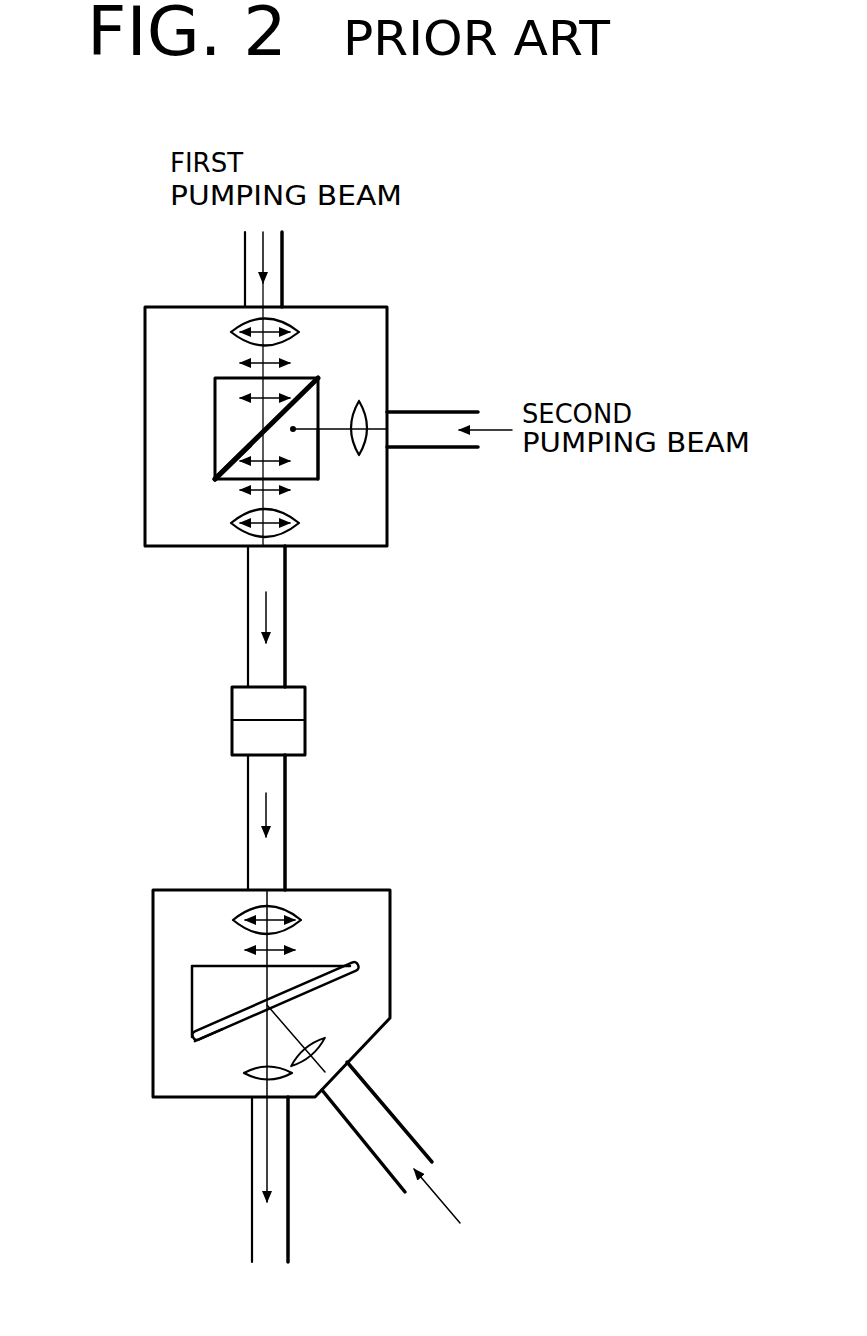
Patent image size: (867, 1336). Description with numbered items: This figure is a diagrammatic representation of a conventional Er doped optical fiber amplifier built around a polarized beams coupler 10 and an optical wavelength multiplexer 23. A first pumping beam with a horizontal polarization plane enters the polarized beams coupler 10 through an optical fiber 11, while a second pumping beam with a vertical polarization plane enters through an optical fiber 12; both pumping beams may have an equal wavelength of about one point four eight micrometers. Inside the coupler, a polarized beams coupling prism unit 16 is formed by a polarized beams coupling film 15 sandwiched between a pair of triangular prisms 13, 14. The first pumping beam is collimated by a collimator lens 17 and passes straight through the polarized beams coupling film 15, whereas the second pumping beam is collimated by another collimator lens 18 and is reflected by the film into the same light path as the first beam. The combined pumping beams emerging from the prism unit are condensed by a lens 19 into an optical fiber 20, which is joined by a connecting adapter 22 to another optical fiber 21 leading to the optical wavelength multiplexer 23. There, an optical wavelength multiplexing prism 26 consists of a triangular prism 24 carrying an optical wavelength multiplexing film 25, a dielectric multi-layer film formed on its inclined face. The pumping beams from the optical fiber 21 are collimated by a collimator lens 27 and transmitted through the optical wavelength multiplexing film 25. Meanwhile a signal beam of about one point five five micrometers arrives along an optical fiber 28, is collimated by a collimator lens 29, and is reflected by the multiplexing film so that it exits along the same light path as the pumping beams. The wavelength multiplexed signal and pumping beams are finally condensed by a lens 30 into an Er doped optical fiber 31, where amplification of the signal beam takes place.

The polarized beams coupler 10 is at (389, 305).
The optical fiber 11 is at (280, 263).
The optical fiber 12 is at (422, 417).
The triangular prism 13 is at (220, 403).
The triangular prism 14 is at (308, 468).
The polarized beams coupling film 15 is at (238, 454).
The polarized beams coupling prism unit 16 is at (318, 378).
The collimator lens 17 is at (232, 332).
The collimator lens 18 is at (360, 452).
The lens 19 is at (248, 532).
The optical fiber 20 is at (285, 613).
The optical fiber 21 is at (285, 788).
The connecting adapter 22 is at (305, 720).
The optical wavelength multiplexer 23 is at (398, 906).
The triangular prism 24 is at (203, 992).
The optical wavelength multiplexing film 25 is at (208, 1037).
The optical wavelength multiplexing prism 26 is at (350, 957).
The collimator lens 27 is at (295, 913).
The optical fiber 28 is at (407, 1128).
The collimator lens 29 is at (327, 1037).
The lens 30 is at (247, 1077).
The Er doped optical fiber 31 is at (288, 1228).